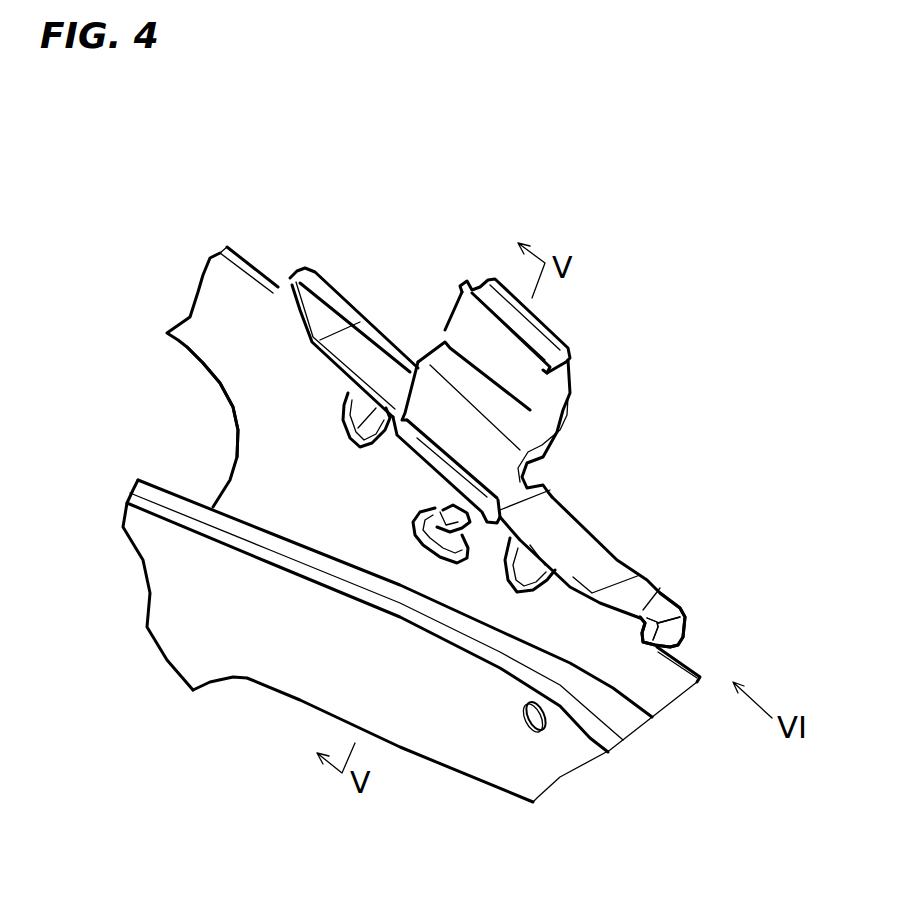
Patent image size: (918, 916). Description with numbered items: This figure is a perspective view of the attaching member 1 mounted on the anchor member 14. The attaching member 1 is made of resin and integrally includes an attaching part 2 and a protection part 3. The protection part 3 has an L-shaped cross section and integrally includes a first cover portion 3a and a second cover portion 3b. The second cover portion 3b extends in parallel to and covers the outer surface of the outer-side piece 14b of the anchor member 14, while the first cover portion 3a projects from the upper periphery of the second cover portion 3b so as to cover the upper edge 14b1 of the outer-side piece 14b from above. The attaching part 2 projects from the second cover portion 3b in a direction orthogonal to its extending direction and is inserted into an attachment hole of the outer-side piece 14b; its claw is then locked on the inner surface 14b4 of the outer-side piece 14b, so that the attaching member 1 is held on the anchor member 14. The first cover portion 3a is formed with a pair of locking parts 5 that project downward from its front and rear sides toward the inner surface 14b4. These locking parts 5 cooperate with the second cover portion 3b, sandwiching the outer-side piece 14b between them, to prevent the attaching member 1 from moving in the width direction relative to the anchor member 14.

The attaching member 1 is at (433, 322).
The attaching part 2 is at (435, 532).
The protection part 3 is at (566, 487).
The first cover portion 3a is at (367, 353).
The second cover portion 3b is at (670, 633).
The locking parts 5 is at (340, 427).
The anchor member 14 is at (226, 463).
The outer-side piece 14b is at (174, 356).
The upper edge 14b1 is at (252, 265).
The inner surface 14b4 is at (243, 372).